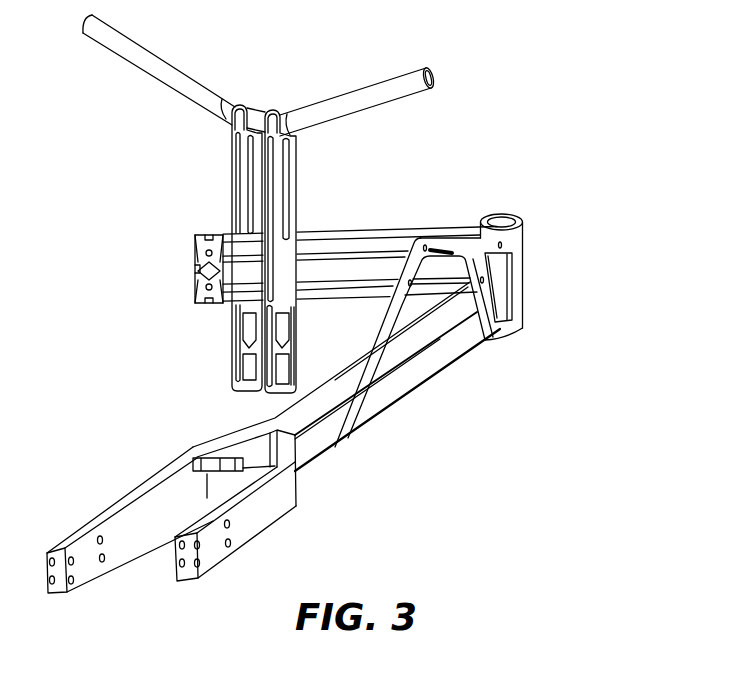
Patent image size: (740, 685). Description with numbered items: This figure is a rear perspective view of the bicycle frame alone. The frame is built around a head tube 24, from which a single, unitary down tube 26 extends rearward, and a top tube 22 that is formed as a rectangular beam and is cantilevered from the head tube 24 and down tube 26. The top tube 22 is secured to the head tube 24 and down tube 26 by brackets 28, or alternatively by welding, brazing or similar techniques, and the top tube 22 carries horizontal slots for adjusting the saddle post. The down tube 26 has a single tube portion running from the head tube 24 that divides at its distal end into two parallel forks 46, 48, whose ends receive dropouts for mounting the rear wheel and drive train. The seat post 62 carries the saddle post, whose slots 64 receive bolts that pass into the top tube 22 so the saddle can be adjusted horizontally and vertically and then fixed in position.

The top tube 22 is at (403, 226).
The head tube 24 is at (523, 278).
The down tube 26 is at (353, 437).
The brackets 28 is at (462, 291).
The fork 46 is at (104, 508).
The fork 48 is at (253, 540).
The seat post 62 is at (227, 165).
The slots 64 is at (290, 195).